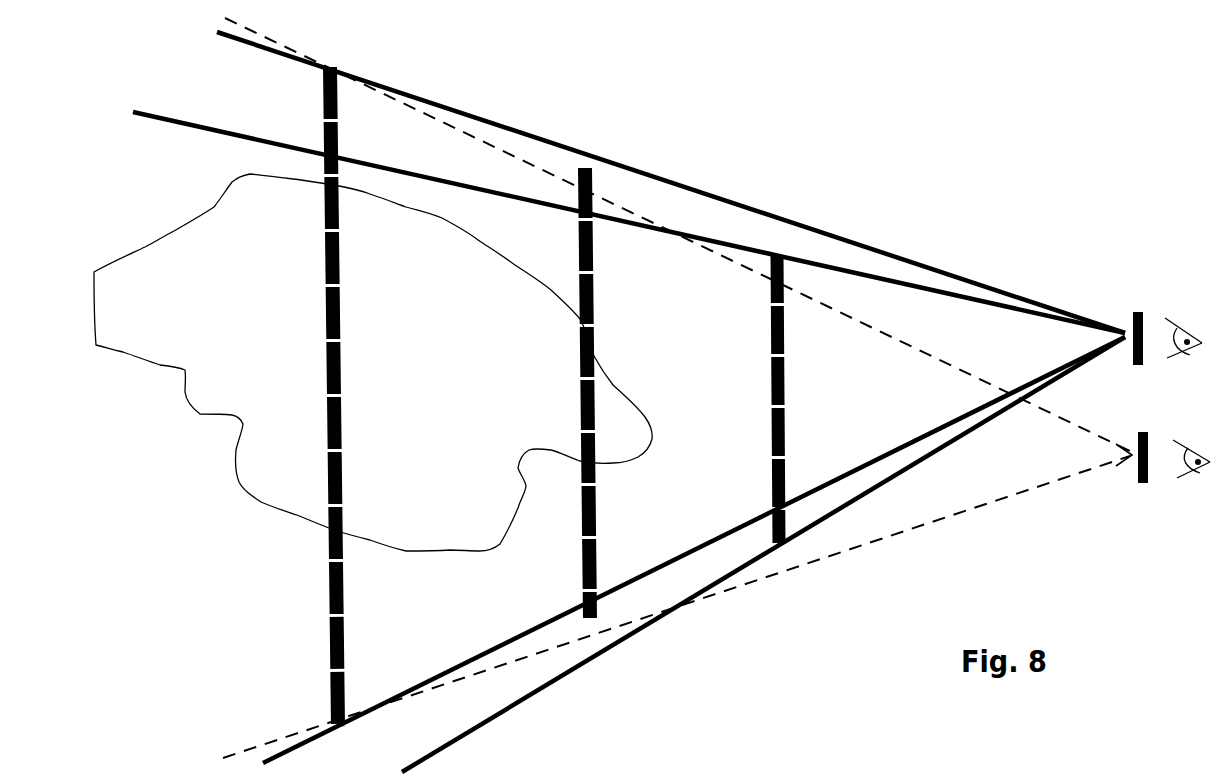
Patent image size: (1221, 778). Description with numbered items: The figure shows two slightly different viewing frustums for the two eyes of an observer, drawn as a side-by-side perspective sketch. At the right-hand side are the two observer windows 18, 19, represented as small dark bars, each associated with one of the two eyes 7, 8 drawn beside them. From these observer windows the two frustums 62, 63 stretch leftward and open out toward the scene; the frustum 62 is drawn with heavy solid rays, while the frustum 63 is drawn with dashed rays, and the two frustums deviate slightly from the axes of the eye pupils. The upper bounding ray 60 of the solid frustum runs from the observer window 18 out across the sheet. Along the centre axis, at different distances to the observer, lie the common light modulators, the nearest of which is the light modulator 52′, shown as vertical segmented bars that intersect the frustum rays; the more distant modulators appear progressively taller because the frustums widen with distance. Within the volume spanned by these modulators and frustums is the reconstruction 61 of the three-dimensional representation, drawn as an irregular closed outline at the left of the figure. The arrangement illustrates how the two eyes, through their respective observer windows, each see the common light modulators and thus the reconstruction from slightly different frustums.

The eye 7 is at (1180, 355).
The eye 8 is at (1186, 462).
The observer window 18 is at (1130, 362).
The observer window 19 is at (1138, 470).
The light modulator 52′ is at (787, 434).
The upper viewing ray 60 is at (583, 153).
The reconstruction 61 is at (449, 552).
The frustum 62 is at (963, 437).
The frustum 63 is at (935, 520).